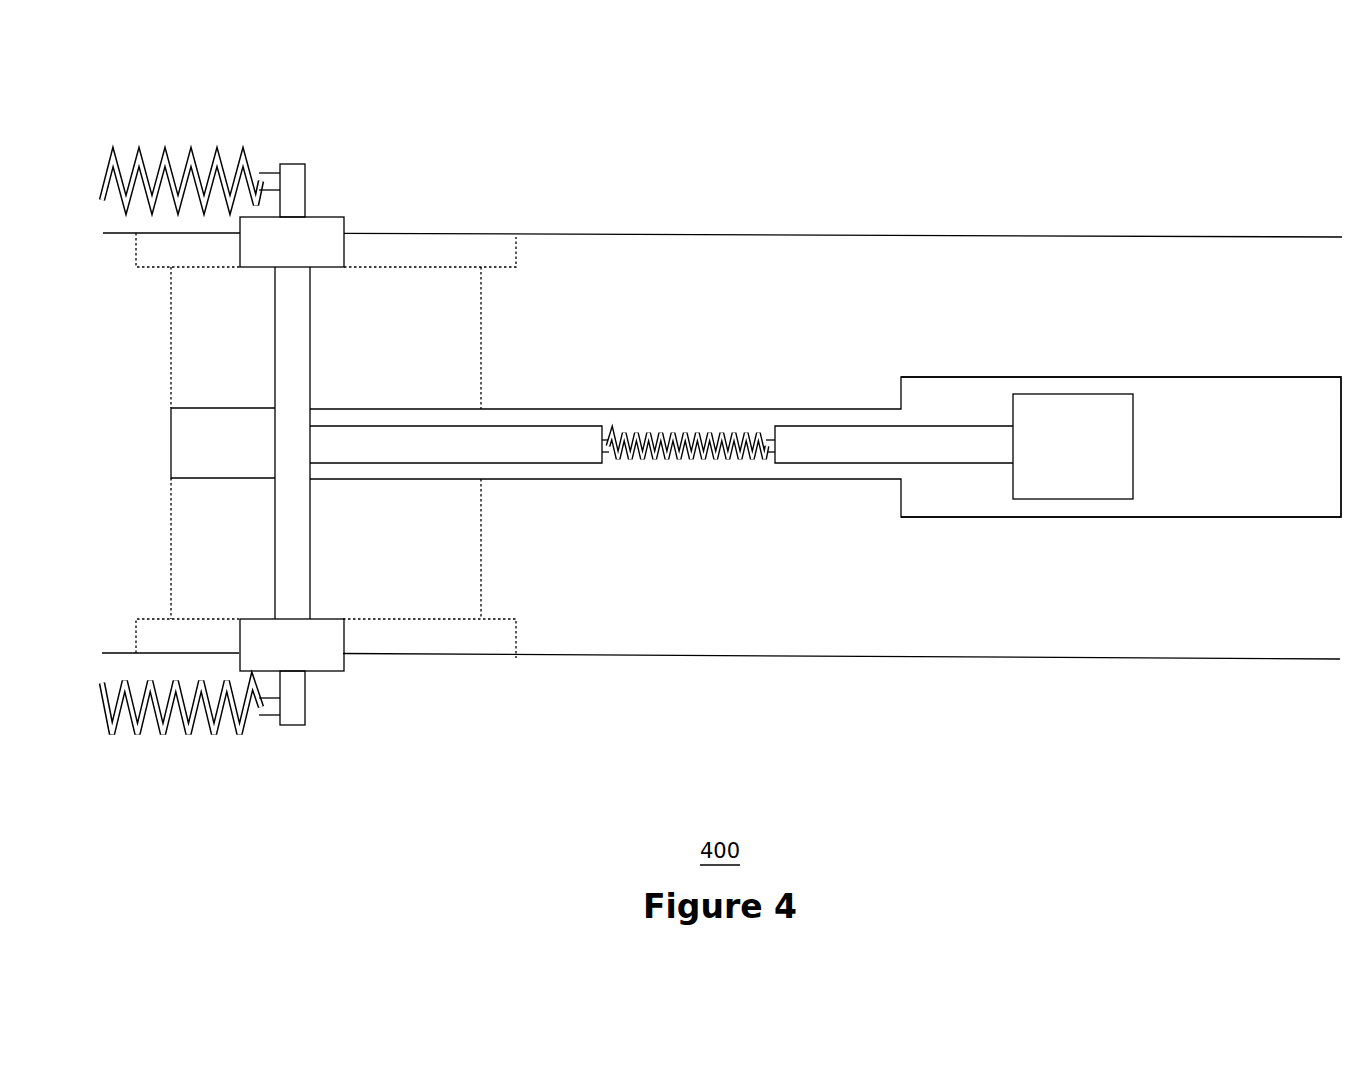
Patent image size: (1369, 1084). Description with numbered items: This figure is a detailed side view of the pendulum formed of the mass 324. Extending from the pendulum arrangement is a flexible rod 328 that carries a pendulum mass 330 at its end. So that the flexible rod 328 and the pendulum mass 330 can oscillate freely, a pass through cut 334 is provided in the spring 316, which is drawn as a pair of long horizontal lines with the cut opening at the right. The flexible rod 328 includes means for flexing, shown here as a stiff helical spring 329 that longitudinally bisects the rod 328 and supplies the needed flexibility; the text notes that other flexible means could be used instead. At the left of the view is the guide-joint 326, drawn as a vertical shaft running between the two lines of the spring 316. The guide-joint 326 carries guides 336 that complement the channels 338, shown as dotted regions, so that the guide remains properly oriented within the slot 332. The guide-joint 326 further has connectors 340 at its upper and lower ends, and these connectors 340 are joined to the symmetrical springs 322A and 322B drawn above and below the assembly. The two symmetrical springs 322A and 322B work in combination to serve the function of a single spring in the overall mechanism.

The spring 316 is at (1293, 659).
The symmetrical spring 322A is at (170, 152).
The symmetrical spring 322B is at (188, 733).
The mass 324 is at (941, 404).
The guide-joint 326 is at (275, 370).
The flexible rod 328 is at (562, 465).
The stiff helical spring 329 is at (675, 464).
The pendulum mass 330 is at (1098, 503).
The slot 332 is at (170, 352).
The pass through cut 334 is at (1325, 520).
The guides 336 is at (328, 216).
The channels 338 is at (500, 267).
The connectors 340 is at (293, 163).